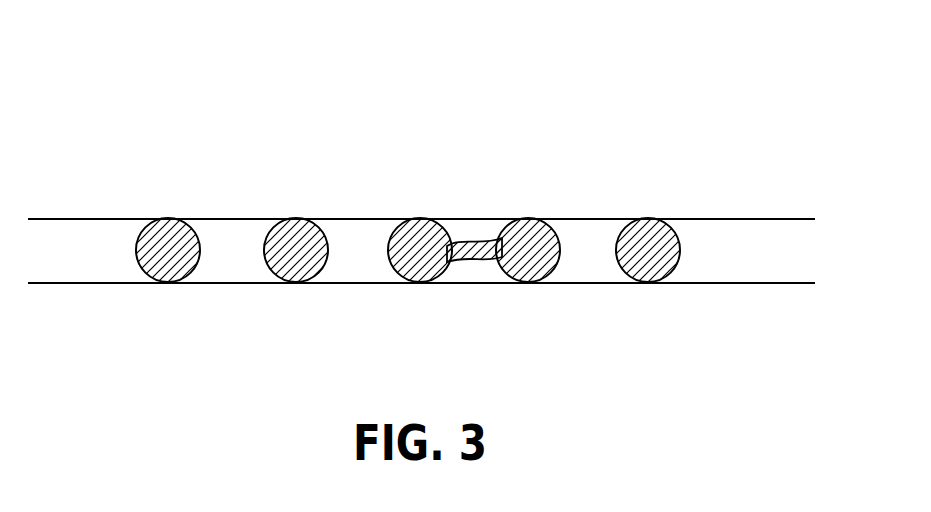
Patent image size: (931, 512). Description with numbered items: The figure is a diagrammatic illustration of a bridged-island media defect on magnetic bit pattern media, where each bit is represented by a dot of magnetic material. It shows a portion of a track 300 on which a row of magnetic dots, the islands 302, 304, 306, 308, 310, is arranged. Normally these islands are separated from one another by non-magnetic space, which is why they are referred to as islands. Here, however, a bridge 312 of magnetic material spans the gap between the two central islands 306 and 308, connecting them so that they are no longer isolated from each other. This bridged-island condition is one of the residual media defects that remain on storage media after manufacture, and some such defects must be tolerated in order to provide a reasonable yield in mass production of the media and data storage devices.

The track 300 is at (443, 104).
The island 302 is at (166, 218).
The island 304 is at (293, 218).
The island 306 is at (417, 218).
The island 308 is at (530, 218).
The island 310 is at (650, 218).
The bridge 312 is at (478, 258).